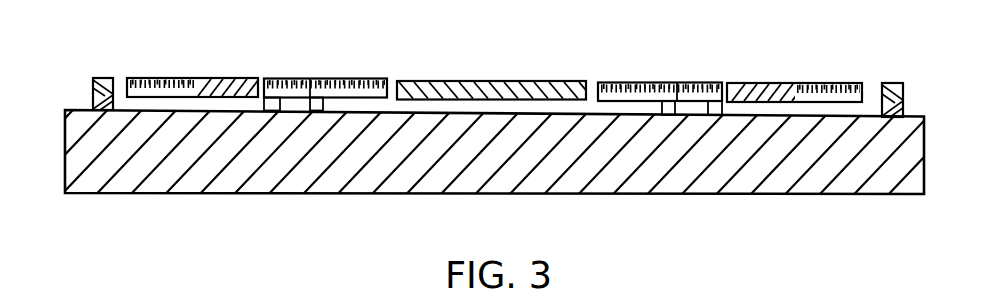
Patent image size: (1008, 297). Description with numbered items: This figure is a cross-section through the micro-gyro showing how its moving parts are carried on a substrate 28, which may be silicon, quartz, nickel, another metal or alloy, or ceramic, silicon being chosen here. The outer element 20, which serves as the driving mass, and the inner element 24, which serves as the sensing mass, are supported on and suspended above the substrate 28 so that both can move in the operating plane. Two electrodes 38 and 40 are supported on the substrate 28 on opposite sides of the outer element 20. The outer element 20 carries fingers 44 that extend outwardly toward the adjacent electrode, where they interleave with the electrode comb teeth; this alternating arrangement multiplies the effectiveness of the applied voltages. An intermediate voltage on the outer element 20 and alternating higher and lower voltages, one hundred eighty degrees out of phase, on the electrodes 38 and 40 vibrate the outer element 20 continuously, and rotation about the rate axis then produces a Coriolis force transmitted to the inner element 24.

The outer element 20 is at (232, 77).
The inner element 24 is at (490, 80).
The substrate 28 is at (308, 167).
The electrode 38 is at (102, 77).
The electrode 40 is at (888, 83).
The fingers 44 is at (162, 77).